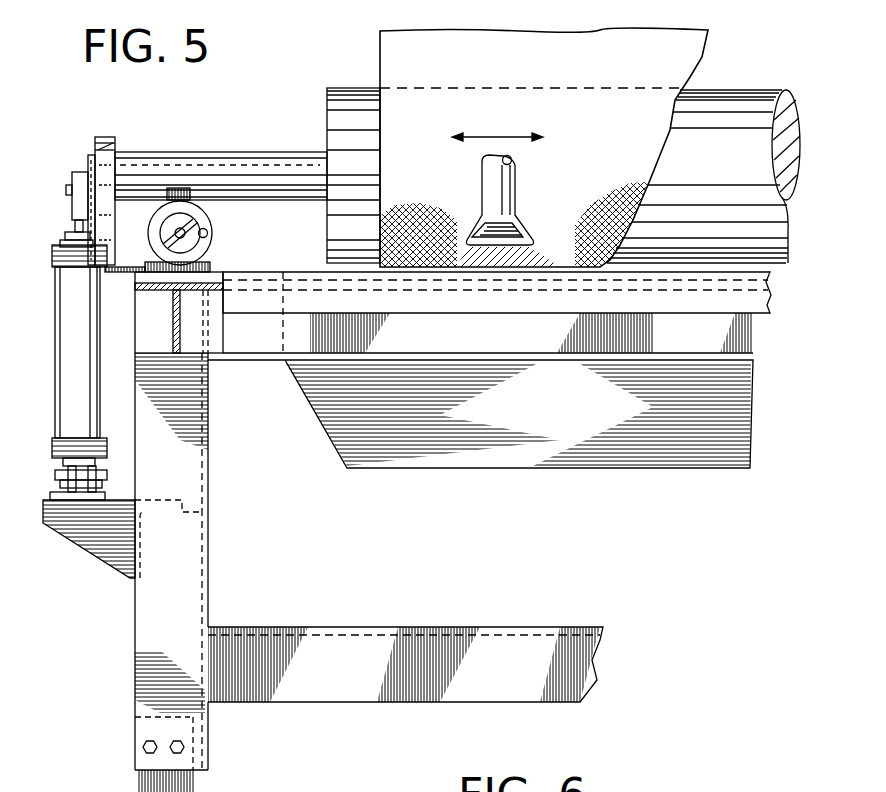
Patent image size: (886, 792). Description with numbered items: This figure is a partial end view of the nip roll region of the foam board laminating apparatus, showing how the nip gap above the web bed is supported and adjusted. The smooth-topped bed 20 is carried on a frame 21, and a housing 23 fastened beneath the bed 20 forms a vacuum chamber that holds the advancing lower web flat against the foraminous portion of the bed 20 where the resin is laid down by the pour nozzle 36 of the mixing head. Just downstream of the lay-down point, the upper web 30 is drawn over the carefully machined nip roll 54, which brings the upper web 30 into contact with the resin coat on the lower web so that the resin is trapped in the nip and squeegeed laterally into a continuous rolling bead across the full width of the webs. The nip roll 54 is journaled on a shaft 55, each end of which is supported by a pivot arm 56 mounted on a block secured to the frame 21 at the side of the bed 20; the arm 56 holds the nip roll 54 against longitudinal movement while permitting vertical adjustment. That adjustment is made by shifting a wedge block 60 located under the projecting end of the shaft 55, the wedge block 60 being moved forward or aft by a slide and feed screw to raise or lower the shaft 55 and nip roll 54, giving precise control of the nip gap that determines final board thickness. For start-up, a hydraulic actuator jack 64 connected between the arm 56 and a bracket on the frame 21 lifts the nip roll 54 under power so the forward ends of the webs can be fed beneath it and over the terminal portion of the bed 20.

The bed 20 is at (322, 272).
The frame 21 is at (173, 452).
The housing 23 is at (483, 455).
The upper web 30 is at (551, 60).
The pour spout or nozzle 36 is at (497, 202).
The nip roll 54 is at (346, 154).
The shaft 55 is at (243, 165).
The arm 56 is at (116, 139).
The wedge block 60 is at (183, 190).
The hydraulic actuator jack 64 is at (75, 383).